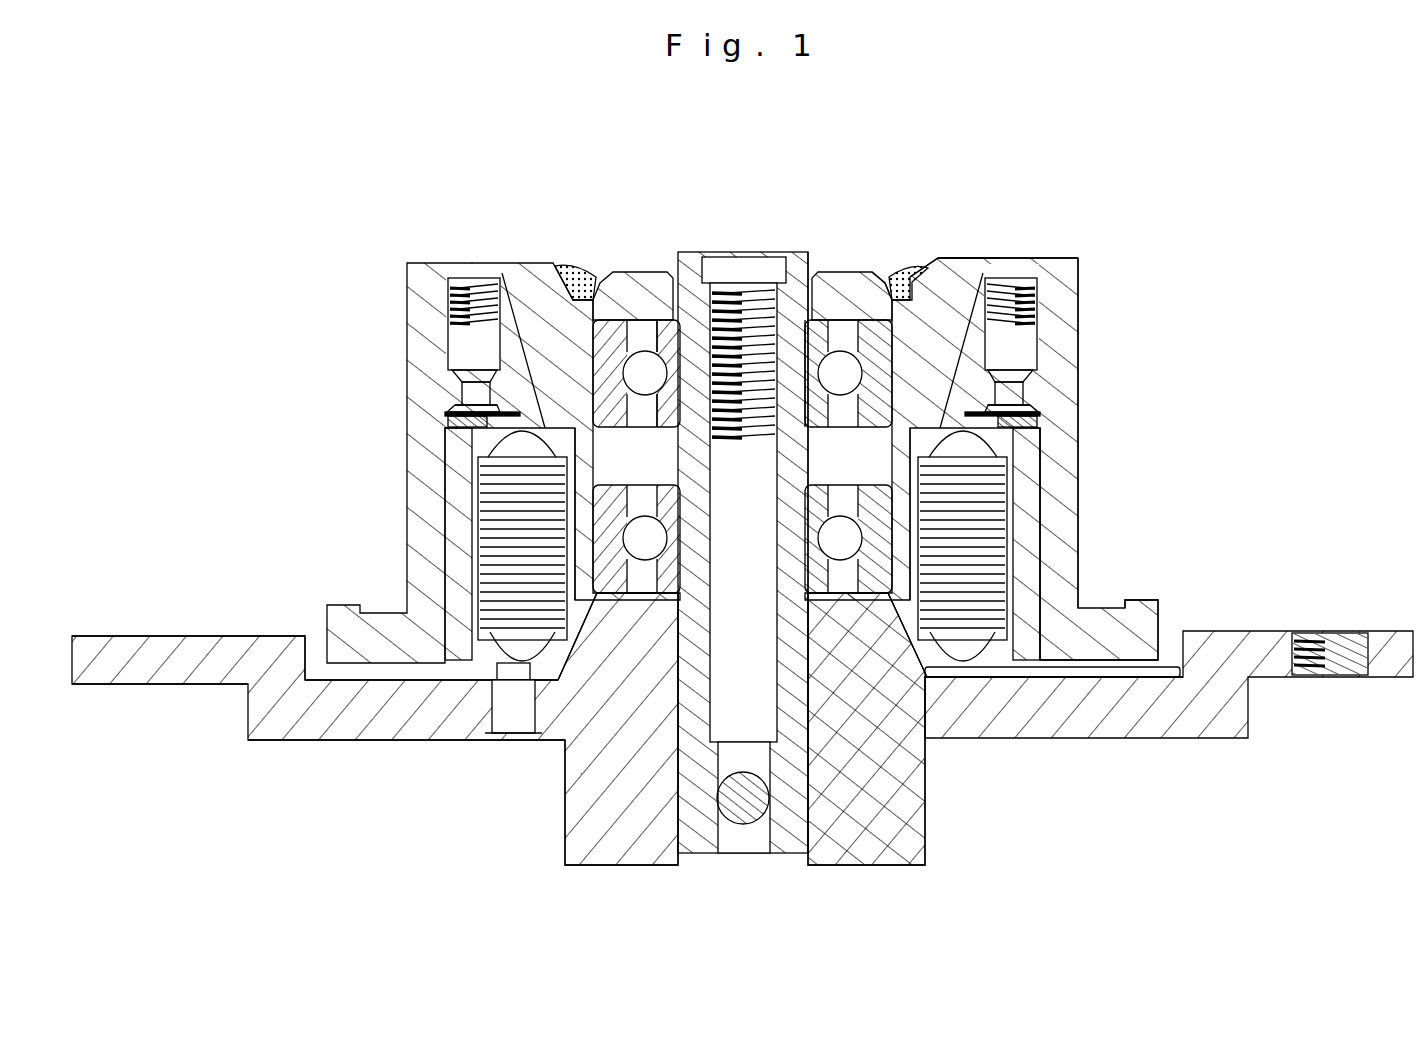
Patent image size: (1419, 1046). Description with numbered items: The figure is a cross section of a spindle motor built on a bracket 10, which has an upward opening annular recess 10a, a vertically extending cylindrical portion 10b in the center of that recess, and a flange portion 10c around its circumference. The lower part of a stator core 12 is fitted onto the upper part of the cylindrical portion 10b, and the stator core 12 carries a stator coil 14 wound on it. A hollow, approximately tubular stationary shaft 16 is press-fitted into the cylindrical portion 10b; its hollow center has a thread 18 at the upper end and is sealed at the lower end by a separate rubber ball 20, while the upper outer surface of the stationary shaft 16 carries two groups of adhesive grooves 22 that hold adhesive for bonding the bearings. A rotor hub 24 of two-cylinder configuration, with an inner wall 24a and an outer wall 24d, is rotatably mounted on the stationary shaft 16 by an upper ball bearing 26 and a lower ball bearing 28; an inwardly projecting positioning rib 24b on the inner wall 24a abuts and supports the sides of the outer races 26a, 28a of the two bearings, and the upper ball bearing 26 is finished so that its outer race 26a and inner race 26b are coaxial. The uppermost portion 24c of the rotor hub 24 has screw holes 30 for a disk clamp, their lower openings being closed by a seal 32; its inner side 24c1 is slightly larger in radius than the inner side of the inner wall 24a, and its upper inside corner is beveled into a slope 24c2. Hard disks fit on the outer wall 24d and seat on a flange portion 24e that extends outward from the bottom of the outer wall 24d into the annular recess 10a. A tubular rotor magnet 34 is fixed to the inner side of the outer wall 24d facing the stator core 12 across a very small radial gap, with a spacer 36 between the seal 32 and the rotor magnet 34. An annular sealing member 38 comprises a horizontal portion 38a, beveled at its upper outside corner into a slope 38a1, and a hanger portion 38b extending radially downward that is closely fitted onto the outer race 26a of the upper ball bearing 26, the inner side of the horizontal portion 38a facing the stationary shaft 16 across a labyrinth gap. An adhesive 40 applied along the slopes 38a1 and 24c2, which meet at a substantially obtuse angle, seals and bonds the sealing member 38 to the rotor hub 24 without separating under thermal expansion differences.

The bracket 10 is at (313, 740).
The annular recess 10a is at (401, 668).
The cylindrical portion 10b is at (632, 655).
The flange portion 10c is at (170, 668).
The stator core 12 is at (493, 627).
The stator coil 14 is at (527, 652).
The stationary shaft 16 is at (800, 340).
The thread 18 is at (733, 250).
The rubber ball 20 is at (748, 816).
The adhesive grooves 22 is at (803, 430).
The rotor hub 24 is at (1082, 300).
The inner wall 24a is at (962, 700).
The positioning rib 24b is at (800, 485).
The uppermost portion 24c is at (1040, 262).
The inner side 24c1 is at (1000, 278).
The slope 24c2 is at (945, 275).
The outer wall 24d is at (1065, 480).
The flange portion 24e is at (1145, 612).
The upper ball bearing 26 is at (857, 340).
The outer race 26a is at (870, 330).
The inner race 26b is at (820, 290).
The lower ball bearing 28 is at (928, 830).
The outer race 28a is at (928, 742).
The screw holes 30 is at (1010, 300).
The seal 32 is at (1040, 420).
The rotor magnet 34 is at (1030, 540).
The spacer 36 is at (1035, 410).
The sealing member 38 is at (850, 335).
The horizontal portion 38a is at (836, 300).
The slope 38a1 is at (905, 285).
The hanger portion 38b is at (895, 330).
The adhesive 40 is at (925, 285).